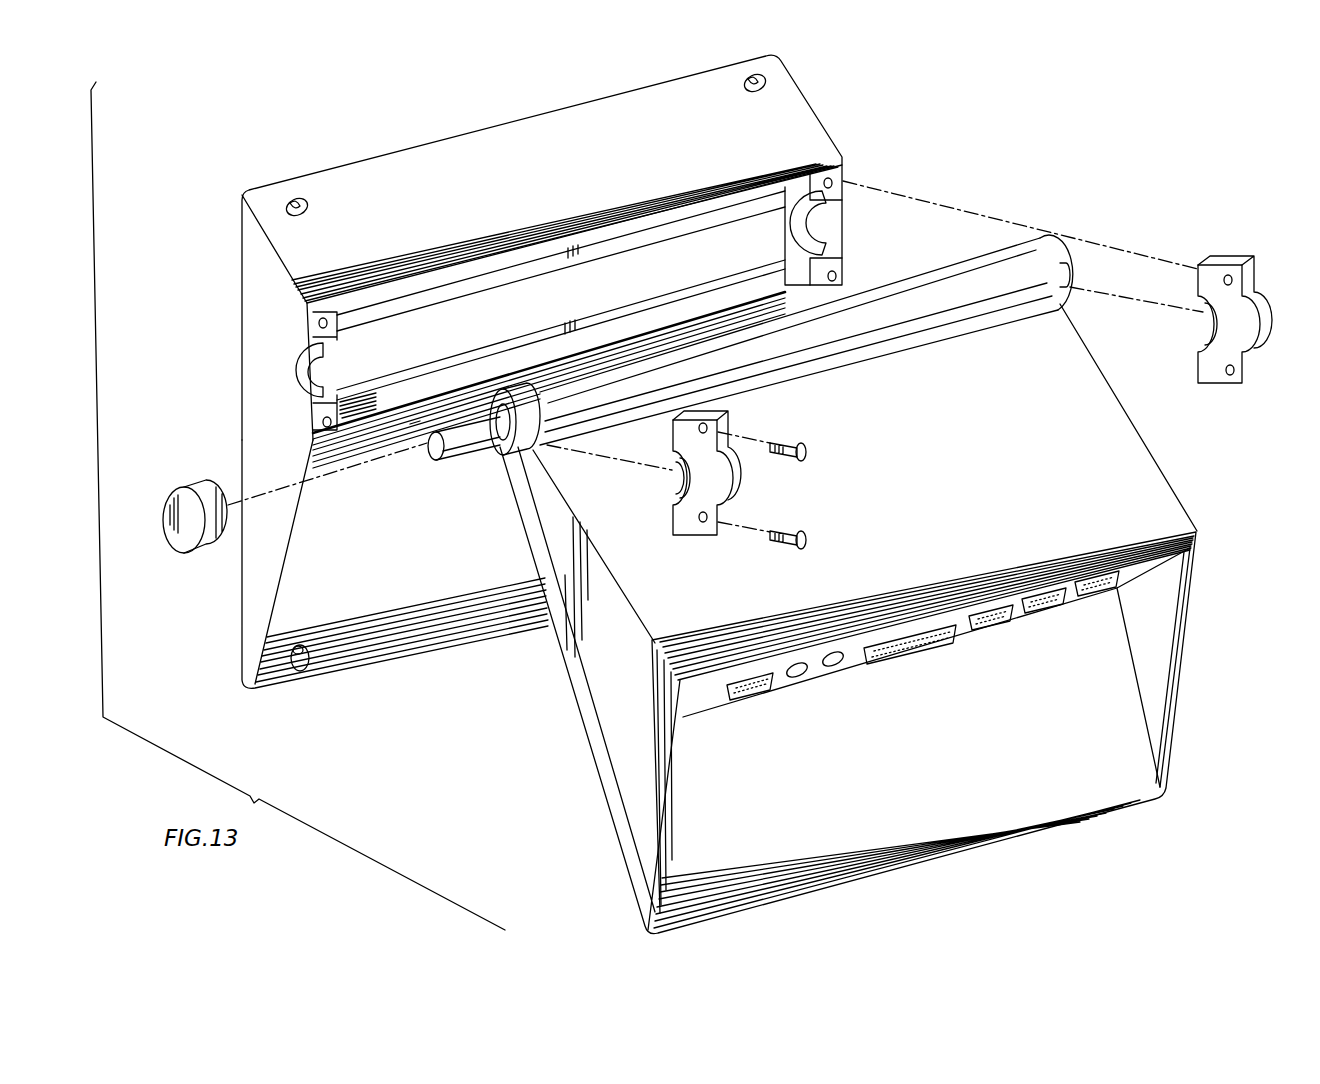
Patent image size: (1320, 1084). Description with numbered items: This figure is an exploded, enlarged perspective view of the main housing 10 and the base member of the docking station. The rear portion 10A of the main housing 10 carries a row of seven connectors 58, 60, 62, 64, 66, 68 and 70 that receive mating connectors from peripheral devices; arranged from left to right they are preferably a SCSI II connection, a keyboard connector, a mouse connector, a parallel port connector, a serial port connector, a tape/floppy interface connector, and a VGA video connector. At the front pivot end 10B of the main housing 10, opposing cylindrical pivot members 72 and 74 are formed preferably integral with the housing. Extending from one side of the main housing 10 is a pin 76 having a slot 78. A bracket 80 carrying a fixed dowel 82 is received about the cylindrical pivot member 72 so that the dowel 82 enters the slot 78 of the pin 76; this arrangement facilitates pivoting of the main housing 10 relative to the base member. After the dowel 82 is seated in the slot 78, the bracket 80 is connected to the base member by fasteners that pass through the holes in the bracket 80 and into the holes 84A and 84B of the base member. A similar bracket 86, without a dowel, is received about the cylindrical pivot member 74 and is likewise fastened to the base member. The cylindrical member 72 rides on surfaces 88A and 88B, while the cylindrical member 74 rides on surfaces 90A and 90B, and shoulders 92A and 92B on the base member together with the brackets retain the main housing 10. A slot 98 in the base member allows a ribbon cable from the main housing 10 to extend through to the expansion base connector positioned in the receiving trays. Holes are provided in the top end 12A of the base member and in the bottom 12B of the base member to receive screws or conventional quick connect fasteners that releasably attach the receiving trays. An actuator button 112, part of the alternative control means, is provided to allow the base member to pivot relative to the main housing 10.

The main housing 10 is at (1230, 492).
The rear portion 10A is at (1125, 653).
The front pivot end 10B is at (1003, 258).
The top end of base member 12A is at (440, 152).
The bottom of base member 12B is at (451, 621).
The connector 58 is at (755, 700).
The connector 60 is at (800, 680).
The connector 62 is at (838, 668).
The connector 64 is at (917, 645).
The connector 66 is at (990, 630).
The connector 68 is at (1045, 612).
The connector 70 is at (1098, 597).
The cylindrical pivot member 72 is at (513, 450).
The cylindrical pivot member 74 is at (1068, 265).
The pin 76 is at (415, 425).
The slot 78 is at (447, 460).
The bracket 80 is at (725, 488).
The dowel 82 is at (673, 476).
The hole 84A is at (323, 323).
The hole 84B is at (343, 413).
The bracket 86 is at (1253, 318).
The surface 88A is at (307, 370).
The surface 88B is at (674, 504).
The surface 90A is at (833, 222).
The surface 90B is at (1205, 345).
The shoulder 92A is at (327, 407).
The shoulder 92B is at (838, 266).
The slot 98 is at (582, 304).
The actuator button 112 is at (186, 532).